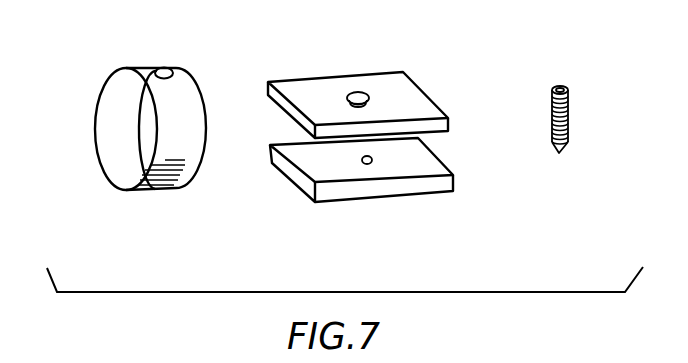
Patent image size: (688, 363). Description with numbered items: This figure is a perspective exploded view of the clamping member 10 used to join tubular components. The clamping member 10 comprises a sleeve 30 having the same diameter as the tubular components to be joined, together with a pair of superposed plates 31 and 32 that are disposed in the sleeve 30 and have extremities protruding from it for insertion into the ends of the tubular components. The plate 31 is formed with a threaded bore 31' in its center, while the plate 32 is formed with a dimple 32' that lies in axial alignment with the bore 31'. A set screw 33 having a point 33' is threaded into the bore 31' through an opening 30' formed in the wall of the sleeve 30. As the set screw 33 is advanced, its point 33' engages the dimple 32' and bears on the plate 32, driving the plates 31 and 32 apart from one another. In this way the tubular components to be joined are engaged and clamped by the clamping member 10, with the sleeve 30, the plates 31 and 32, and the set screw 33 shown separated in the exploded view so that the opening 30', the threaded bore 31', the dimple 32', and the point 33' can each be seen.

The clamping member 10 is at (127, 218).
The sleeve 30 is at (150, 154).
The opening 30' is at (172, 51).
The plate 31 is at (358, 82).
The threaded bore 31' is at (361, 63).
The plate 32 is at (361, 196).
The dimple 32' is at (366, 205).
The set screw 33 is at (585, 115).
The point 33' is at (551, 175).